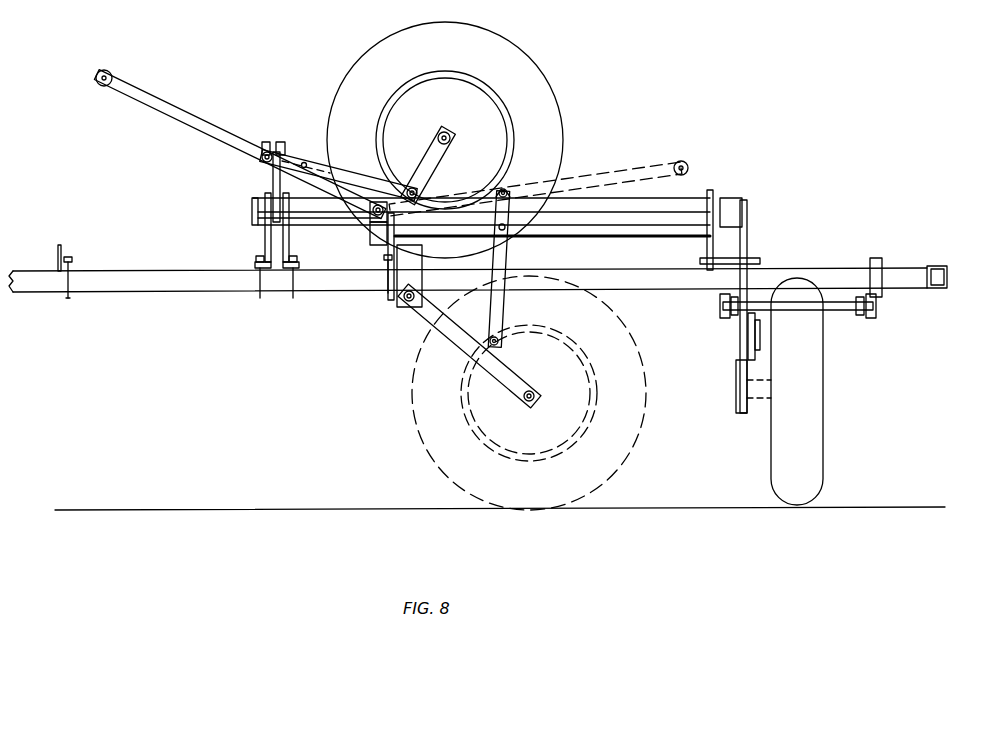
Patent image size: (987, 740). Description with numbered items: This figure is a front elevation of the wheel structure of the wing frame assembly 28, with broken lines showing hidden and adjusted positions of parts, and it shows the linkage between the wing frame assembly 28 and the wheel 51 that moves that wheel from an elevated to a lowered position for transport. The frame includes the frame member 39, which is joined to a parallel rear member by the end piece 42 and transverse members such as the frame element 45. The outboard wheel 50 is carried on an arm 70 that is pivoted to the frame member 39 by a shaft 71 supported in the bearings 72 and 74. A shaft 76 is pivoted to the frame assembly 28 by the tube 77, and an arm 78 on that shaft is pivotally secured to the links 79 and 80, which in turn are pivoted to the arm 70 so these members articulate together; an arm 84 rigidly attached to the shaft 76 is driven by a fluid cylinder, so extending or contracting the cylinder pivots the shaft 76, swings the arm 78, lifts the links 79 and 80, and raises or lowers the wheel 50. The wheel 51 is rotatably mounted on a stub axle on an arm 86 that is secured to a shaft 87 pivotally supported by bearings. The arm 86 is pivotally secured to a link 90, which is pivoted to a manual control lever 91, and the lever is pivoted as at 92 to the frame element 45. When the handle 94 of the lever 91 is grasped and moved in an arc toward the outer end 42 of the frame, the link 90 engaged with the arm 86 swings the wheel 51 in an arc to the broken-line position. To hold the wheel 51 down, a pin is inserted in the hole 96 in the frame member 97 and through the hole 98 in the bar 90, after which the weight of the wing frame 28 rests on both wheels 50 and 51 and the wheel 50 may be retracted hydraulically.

The wing frame assembly 28 is at (136, 304).
The frame member 39 is at (205, 286).
The end piece 42 is at (918, 270).
The transverse member 45 is at (387, 247).
The wheel 50 is at (822, 418).
The wheel 51 is at (538, 77).
The arm 70 is at (744, 372).
The shaft 71 is at (838, 312).
The bearing 72 is at (725, 318).
The bearing 74 is at (861, 315).
The shaft 76 is at (737, 199).
The tube 77 is at (702, 189).
The arm 78 is at (752, 238).
The link 79 is at (759, 352).
The link 80 is at (740, 348).
The arm 84 is at (272, 179).
The arm 86 is at (432, 153).
The shaft 87 is at (400, 306).
The link 90 is at (341, 168).
The manual control lever 91 is at (196, 118).
The pivot 92 is at (371, 221).
The handle 94 is at (104, 87).
The hole 96 is at (516, 233).
The frame member 97 is at (633, 230).
The hole 98 is at (304, 162).